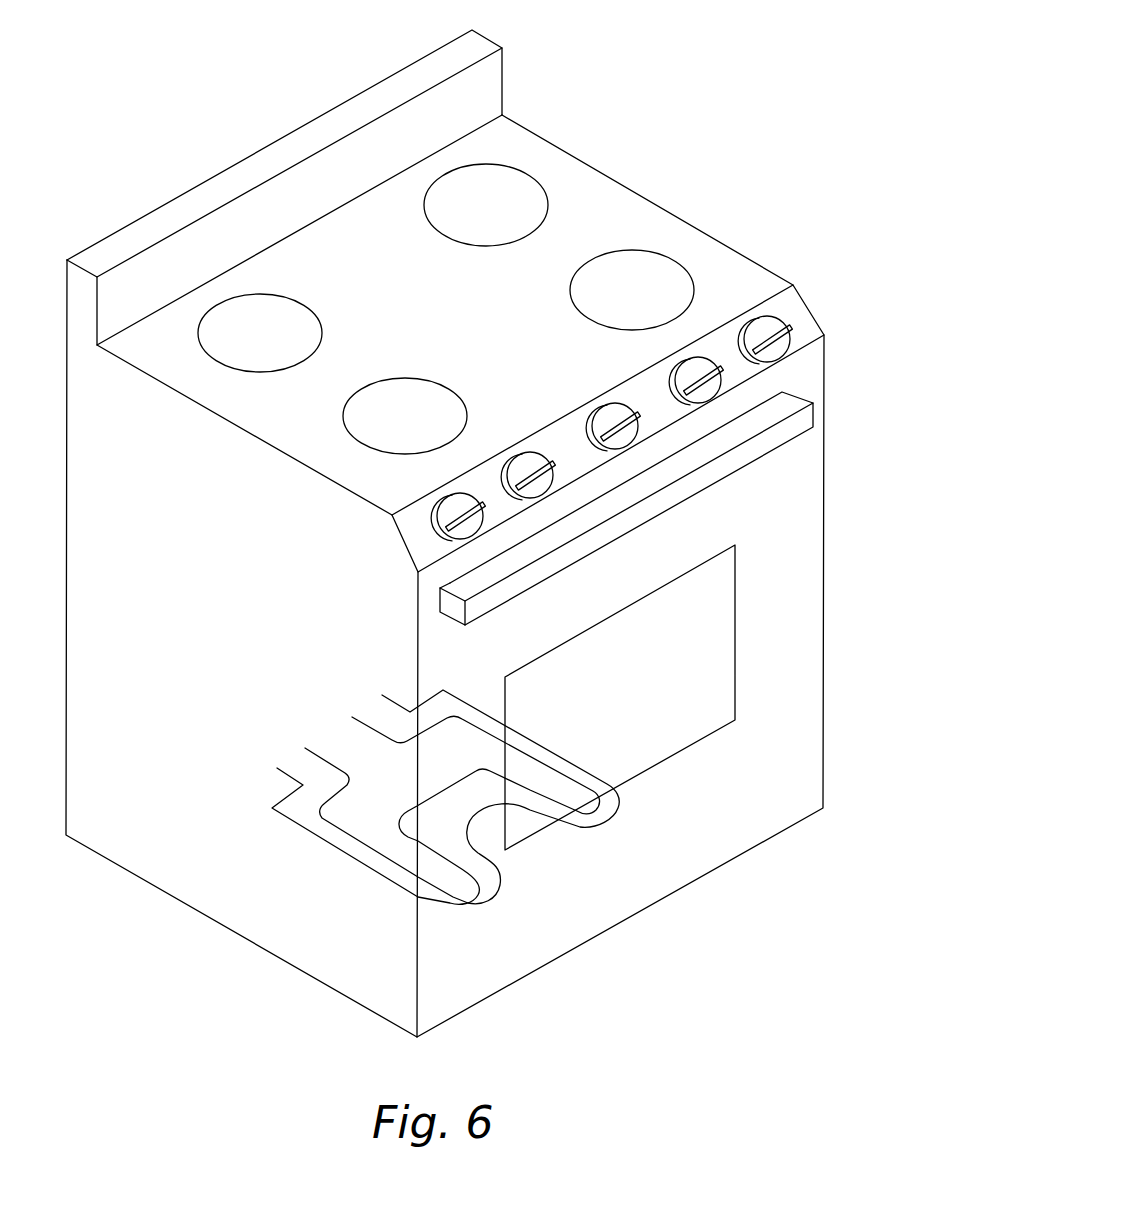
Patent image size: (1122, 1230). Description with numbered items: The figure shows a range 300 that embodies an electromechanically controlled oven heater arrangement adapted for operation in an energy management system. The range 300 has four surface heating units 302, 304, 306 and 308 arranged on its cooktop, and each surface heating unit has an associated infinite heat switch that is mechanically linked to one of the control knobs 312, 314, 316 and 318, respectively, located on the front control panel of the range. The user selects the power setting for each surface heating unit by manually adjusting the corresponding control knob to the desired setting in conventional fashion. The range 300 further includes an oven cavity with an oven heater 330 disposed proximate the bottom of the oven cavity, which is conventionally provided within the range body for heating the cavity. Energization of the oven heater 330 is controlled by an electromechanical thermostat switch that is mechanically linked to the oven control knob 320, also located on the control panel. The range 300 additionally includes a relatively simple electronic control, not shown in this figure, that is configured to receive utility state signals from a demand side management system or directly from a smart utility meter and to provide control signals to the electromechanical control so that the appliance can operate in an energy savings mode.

The range 300 is at (660, 58).
The surface heating unit 302 is at (427, 402).
The surface heating unit 304 is at (287, 322).
The surface heating unit 306 is at (519, 193).
The surface heating unit 308 is at (648, 268).
The control knob 312 is at (445, 513).
The control knob 314 is at (537, 488).
The control knob 316 is at (623, 443).
The control knob 318 is at (702, 393).
The oven control knob 320 is at (760, 330).
The oven heater 330 is at (330, 868).